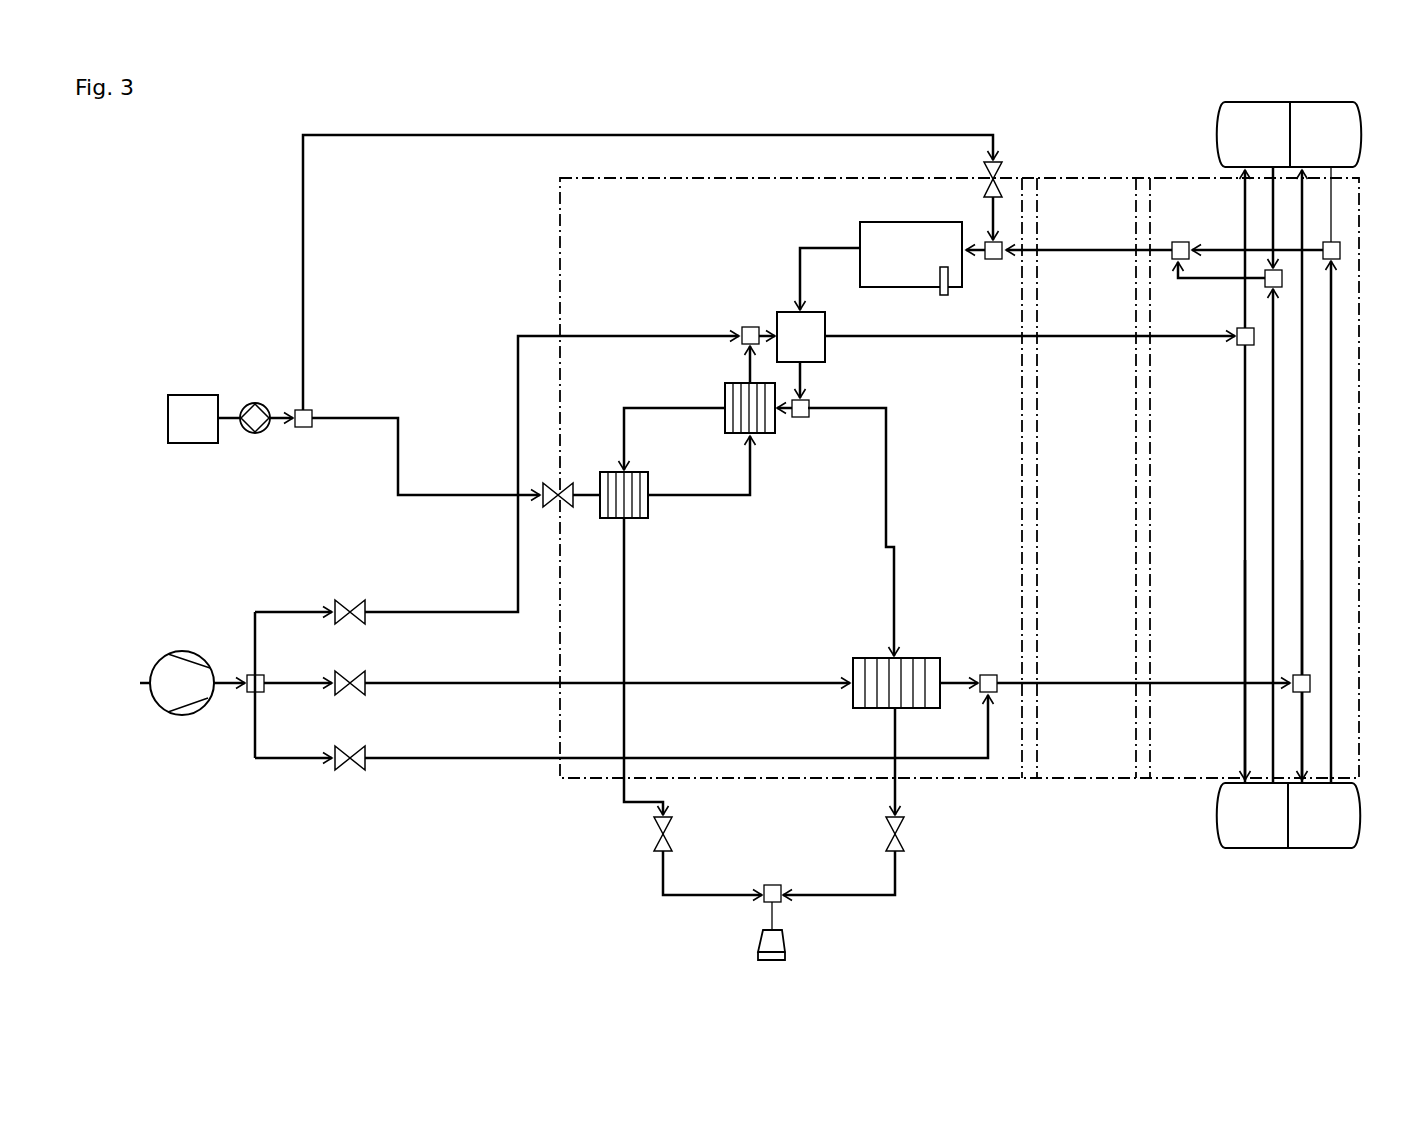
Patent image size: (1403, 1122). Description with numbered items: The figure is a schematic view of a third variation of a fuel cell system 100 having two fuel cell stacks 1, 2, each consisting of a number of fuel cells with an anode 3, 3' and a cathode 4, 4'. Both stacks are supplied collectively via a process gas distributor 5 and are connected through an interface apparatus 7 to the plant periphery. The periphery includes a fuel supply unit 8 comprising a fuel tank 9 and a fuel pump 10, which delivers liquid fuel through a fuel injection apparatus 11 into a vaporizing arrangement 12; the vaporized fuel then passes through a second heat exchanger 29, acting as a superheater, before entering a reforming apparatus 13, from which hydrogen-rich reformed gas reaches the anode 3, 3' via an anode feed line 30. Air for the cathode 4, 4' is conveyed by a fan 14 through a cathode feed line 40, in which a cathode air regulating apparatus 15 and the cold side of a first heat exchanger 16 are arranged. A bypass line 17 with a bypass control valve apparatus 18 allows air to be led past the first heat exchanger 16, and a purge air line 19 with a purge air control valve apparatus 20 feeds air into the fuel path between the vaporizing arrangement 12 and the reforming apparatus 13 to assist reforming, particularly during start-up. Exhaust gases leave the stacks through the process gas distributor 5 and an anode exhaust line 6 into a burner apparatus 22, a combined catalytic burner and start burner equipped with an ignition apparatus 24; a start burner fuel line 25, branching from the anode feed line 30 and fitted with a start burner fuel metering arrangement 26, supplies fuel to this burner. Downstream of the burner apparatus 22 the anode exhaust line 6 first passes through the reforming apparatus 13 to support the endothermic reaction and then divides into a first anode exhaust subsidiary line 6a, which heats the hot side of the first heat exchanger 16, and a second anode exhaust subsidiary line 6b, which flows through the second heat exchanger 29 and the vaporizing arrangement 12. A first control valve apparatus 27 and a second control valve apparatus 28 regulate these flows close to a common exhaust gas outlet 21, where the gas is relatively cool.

The fuel cell stack 1 is at (1272, 100).
The fuel cell stack 2 is at (1265, 849).
The anode 3 is at (1248, 138).
The cathode 4 is at (1312, 138).
The anode 3' is at (1248, 820).
The cathode 4' is at (1310, 820).
The process gas distributor 5 is at (1165, 178).
The anode exhaust line 6 is at (1092, 252).
The first anode exhaust subsidiary line 6a is at (887, 522).
The second anode exhaust subsidiary line 6b is at (626, 660).
The interface apparatus 7 is at (1097, 178).
The fuel supply unit 8 is at (193, 328).
The fuel tank 9 is at (193, 419).
The fuel pump 10 is at (260, 433).
The fuel injection apparatus 11 is at (556, 500).
The vaporizing arrangement 12 is at (642, 519).
The reforming apparatus 13 is at (801, 355).
The fan 14 is at (195, 652).
The cathode air regulating apparatus 15 is at (345, 690).
The first heat exchanger 16 is at (924, 657).
The bypass line 17 is at (462, 760).
The bypass control valve apparatus 18 is at (347, 765).
The purge air line 19 is at (465, 613).
The purge air control valve apparatus 20 is at (347, 620).
The exhaust gas outlet 21 is at (785, 940).
The burner apparatus 22 is at (881, 266).
The ignition apparatus 24 is at (950, 290).
The start burner fuel line 25 is at (745, 133).
The start burner fuel metering arrangement 26 is at (1002, 185).
The first control valve apparatus 27 is at (900, 834).
The second control valve apparatus 28 is at (668, 834).
The second heat exchanger 29 is at (767, 434).
The anode feed line 30 is at (985, 337).
The cathode feed line 40 is at (725, 685).
The fuel cell system 100 is at (348, 845).